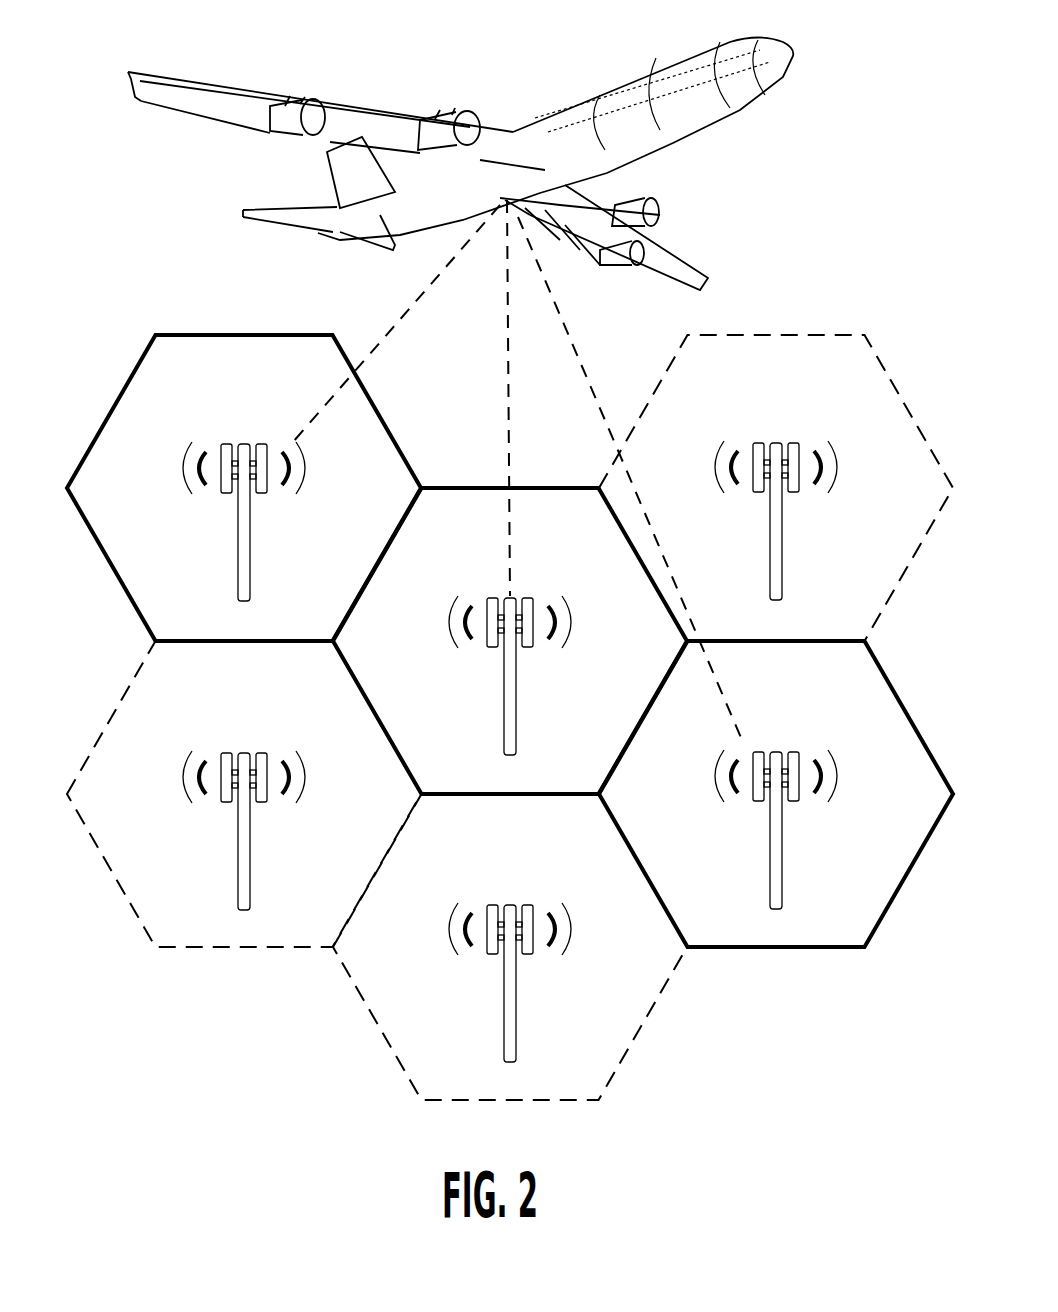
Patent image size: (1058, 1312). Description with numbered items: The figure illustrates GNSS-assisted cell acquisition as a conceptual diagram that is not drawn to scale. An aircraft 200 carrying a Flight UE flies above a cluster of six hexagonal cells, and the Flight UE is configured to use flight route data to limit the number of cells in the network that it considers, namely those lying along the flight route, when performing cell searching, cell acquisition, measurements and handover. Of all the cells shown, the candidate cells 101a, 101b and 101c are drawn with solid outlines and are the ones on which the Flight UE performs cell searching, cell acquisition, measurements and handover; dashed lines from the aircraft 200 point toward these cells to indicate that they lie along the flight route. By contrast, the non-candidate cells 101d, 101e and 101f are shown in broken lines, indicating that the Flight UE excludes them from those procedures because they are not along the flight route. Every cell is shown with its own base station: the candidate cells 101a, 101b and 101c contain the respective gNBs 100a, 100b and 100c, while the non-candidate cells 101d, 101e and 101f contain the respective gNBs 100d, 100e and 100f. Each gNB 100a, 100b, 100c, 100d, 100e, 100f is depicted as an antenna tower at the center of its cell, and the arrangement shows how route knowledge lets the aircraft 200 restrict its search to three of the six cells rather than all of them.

The aircraft 200 is at (377, 110).
The gNB 100a is at (242, 444).
The gNB 100b is at (527, 645).
The gNB 100c is at (773, 752).
The gNB 100d is at (242, 753).
The gNB 100e is at (508, 905).
The gNB 100f is at (773, 443).
The candidate cell 101a is at (132, 372).
The candidate cell 101b is at (460, 488).
The candidate cell 101c is at (917, 730).
The non-candidate cell 101d is at (112, 868).
The non-candidate cell 101e is at (648, 1008).
The non-candidate cell 101f is at (765, 335).